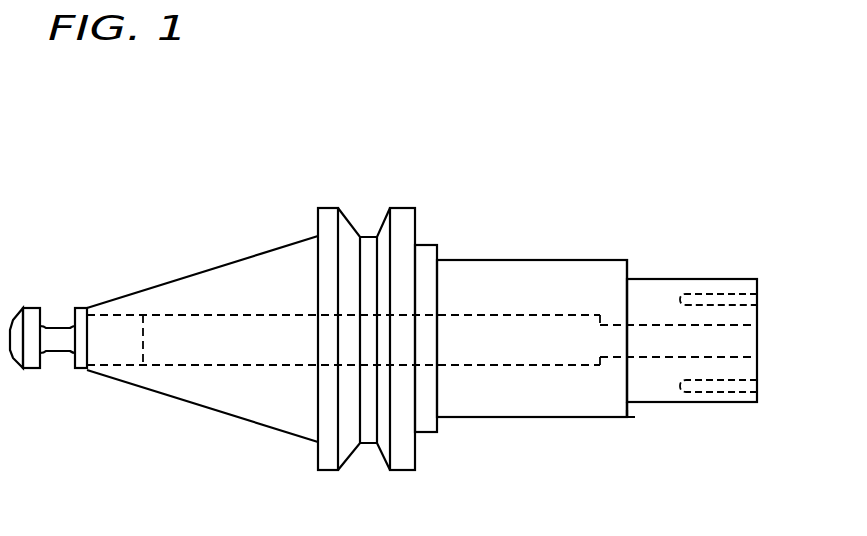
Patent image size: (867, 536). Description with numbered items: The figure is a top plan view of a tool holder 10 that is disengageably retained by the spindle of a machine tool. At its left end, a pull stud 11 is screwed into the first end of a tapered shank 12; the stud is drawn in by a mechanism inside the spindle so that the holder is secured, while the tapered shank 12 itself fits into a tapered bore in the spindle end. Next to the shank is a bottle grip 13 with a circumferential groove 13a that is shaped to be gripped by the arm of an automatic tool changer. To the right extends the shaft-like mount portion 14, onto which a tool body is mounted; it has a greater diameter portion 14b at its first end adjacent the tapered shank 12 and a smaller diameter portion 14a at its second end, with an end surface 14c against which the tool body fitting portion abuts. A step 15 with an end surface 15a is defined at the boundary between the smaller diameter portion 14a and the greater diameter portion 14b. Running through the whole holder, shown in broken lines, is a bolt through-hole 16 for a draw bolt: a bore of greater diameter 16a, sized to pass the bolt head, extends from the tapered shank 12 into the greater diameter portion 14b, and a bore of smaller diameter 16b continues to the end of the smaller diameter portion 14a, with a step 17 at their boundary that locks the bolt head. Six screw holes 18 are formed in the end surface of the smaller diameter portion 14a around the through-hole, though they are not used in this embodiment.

The tool holder 10 is at (503, 183).
The pull stud 11 is at (32, 310).
The tapered shank 12 is at (232, 261).
The bottle grip 13 is at (322, 205).
The circumferential groove 13a is at (367, 235).
The mount portion 14 is at (505, 258).
The smaller diameter portion 14a is at (653, 297).
The greater diameter portion 14b is at (573, 273).
The end surface 14c is at (446, 243).
The step 15 is at (614, 429).
The end surface 15a is at (629, 418).
The bolt through-hole 16 is at (272, 351).
The bore of greater diameter 16a is at (485, 356).
The bore of smaller diameter 16b is at (647, 347).
The step 17 is at (598, 365).
The screw holes 18 is at (728, 296).